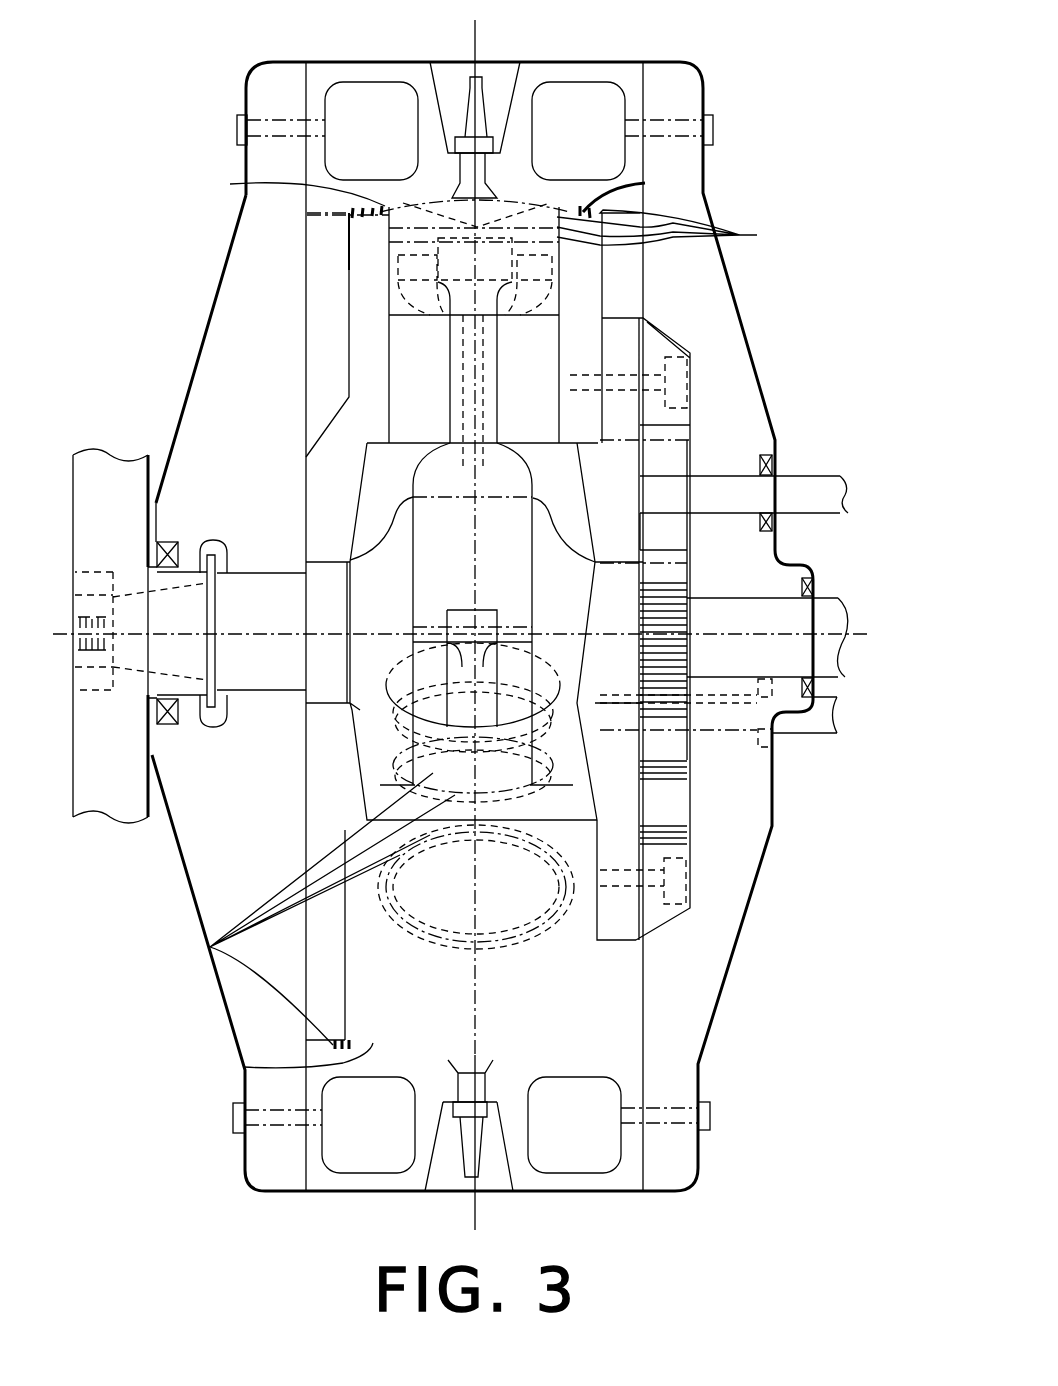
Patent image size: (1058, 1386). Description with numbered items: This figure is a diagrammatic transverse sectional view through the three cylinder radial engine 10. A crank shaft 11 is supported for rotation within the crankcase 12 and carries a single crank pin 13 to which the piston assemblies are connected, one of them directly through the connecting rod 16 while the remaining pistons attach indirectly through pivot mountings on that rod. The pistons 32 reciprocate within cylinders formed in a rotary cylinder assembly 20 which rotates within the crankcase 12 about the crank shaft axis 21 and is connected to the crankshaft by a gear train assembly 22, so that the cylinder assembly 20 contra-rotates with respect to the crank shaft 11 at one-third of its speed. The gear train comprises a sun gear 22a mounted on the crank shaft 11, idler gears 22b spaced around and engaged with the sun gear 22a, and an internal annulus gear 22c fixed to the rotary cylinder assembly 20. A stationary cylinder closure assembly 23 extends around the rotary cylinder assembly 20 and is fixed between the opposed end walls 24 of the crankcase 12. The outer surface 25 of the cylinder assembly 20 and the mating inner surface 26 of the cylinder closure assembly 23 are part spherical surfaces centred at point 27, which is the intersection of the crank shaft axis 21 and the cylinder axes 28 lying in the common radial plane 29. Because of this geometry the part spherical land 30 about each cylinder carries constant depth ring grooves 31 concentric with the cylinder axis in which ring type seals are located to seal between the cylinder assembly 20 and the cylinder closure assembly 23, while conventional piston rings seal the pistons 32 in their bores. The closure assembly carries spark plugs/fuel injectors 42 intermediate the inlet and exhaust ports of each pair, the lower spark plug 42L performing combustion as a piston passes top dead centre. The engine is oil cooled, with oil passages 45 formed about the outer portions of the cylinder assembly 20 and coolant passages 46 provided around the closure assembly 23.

The three cylinder radial engine 10 is at (750, 110).
The crank shaft 11 is at (548, 572).
The crankcase 12 is at (195, 803).
The crank pin 13 is at (500, 528).
The connecting rod 16 is at (462, 375).
The rotary cylinder assembly 20 is at (365, 343).
The crank shaft axis 21 is at (163, 633).
The gear train assembly 22 is at (672, 462).
The sun gear 22a is at (667, 618).
The idler gears 22b is at (673, 532).
The internal annulus gear 22c is at (672, 432).
The cylinder closure assembly 23 is at (600, 73).
The opposed end walls 24 is at (720, 365).
The outer surface 25 is at (236, 185).
The inner surface 26 is at (348, 217).
The centre point 27 is at (470, 632).
The cylinder axes 28 is at (476, 481).
The common radial plane 29 is at (475, 40).
The part spherical land 30 is at (645, 183).
The ring grooves 31 is at (488, 627).
The pistons 32 is at (397, 268).
The spark plugs/fuel injectors 42 is at (485, 118).
The lower spark plug 42L is at (475, 1140).
The oil passages 45 is at (627, 297).
The coolant passages 46 is at (375, 82).